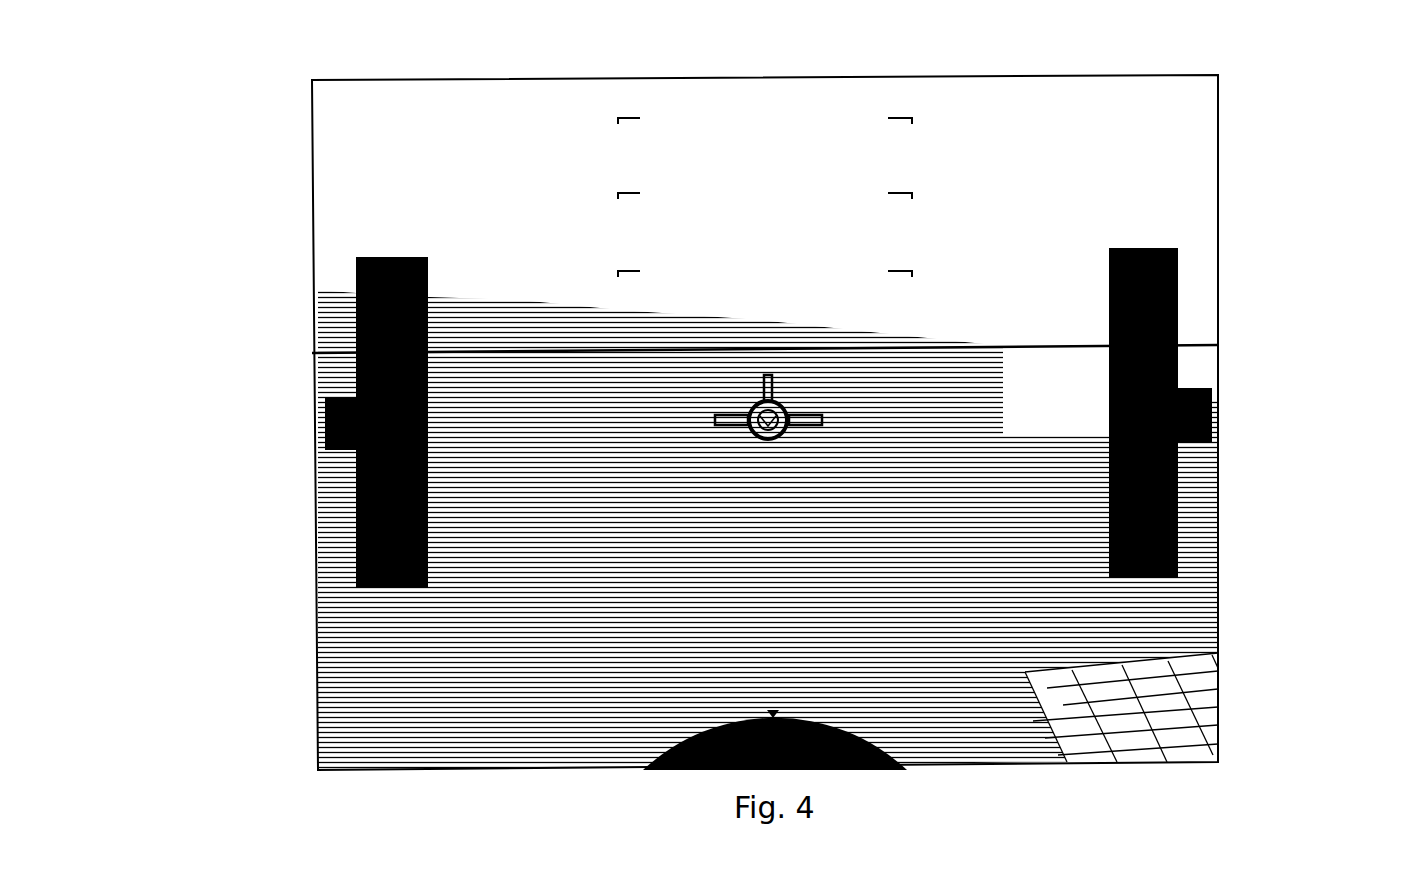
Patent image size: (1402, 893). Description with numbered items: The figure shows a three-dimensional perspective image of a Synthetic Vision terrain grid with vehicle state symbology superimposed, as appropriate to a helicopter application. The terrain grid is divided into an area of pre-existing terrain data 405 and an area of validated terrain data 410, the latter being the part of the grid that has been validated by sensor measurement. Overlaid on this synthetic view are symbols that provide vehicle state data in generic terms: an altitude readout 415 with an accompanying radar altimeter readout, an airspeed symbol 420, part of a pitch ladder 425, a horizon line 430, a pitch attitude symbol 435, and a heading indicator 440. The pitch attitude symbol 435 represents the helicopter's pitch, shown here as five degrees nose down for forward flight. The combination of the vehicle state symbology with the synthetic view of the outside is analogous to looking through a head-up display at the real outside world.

The area of pre-existing terrain data 405 is at (1155, 711).
The area of validated terrain data 410 is at (1072, 634).
The altitude readout 415 is at (1153, 467).
The airspeed symbol 420 is at (368, 478).
The pitch ladder 425 is at (922, 177).
The horizon line 430 is at (957, 345).
The pitch attitude symbol 435 is at (742, 402).
The heading indicator 440 is at (630, 767).